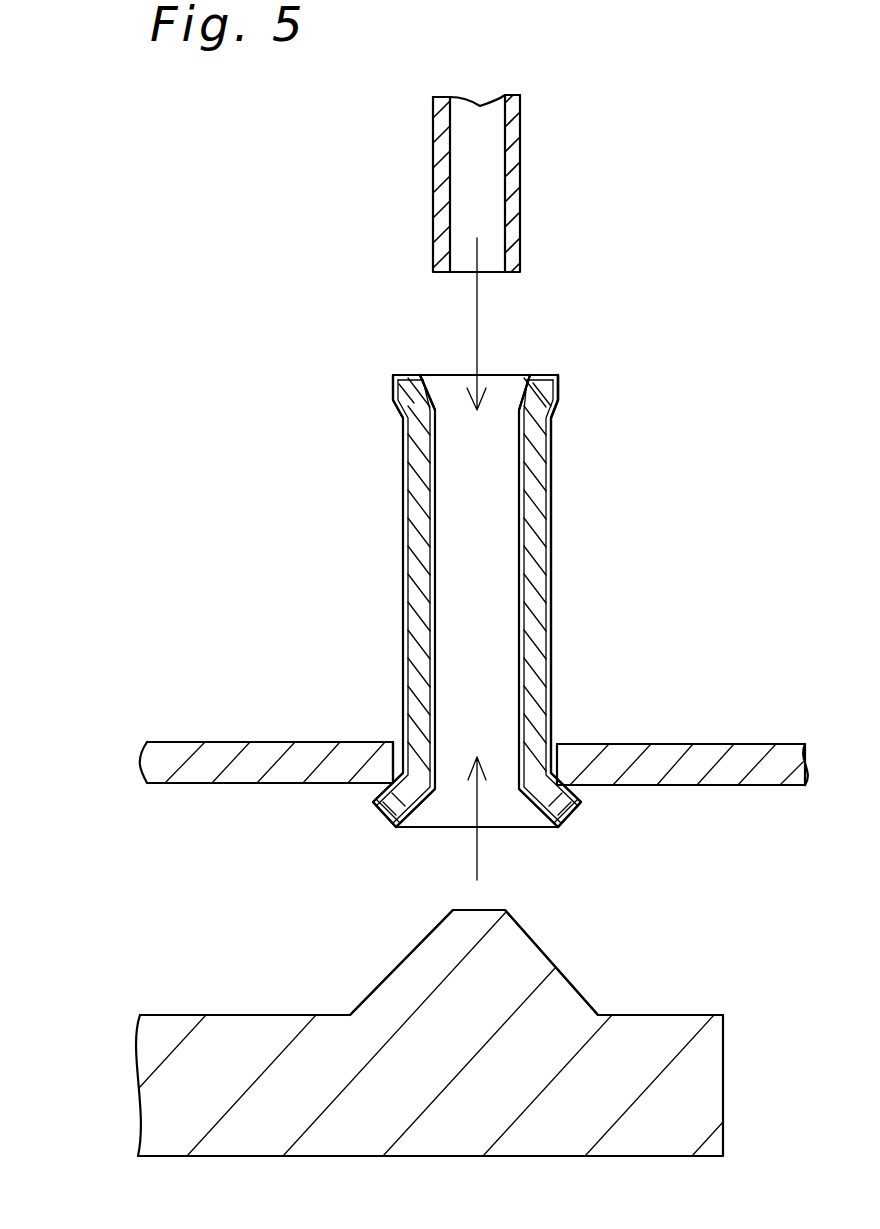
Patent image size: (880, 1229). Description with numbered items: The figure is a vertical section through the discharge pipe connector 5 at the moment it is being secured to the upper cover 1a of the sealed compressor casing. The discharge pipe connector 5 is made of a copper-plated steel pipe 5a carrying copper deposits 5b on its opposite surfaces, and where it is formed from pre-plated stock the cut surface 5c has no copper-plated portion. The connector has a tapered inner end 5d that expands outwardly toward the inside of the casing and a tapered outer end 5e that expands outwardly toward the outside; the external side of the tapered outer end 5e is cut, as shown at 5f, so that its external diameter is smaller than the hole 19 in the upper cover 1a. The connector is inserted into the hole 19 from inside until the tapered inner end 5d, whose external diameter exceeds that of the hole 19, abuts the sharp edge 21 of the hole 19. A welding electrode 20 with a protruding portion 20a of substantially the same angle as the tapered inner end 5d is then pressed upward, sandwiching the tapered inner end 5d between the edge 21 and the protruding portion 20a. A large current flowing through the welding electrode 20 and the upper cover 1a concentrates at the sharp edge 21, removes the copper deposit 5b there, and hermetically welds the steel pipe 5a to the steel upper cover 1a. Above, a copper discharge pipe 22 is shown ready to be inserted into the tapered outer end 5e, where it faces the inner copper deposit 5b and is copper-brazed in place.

The discharge pipe connector 5 is at (535, 525).
The copper-plated steel pipe 5a is at (405, 455).
The copper deposits 5b is at (420, 377).
The cut surface 5c is at (413, 376).
The tapered inner end 5d is at (380, 812).
The tapered outer end 5e is at (557, 377).
The cut of the external side of the tapered outer end 5f is at (560, 377).
The upper cover 1a is at (163, 762).
The hole 19 is at (387, 743).
The edge 21 is at (563, 783).
The welding electrode 20 is at (182, 1103).
The protruding portion 20a is at (522, 960).
The discharge pipe 22 is at (487, 140).